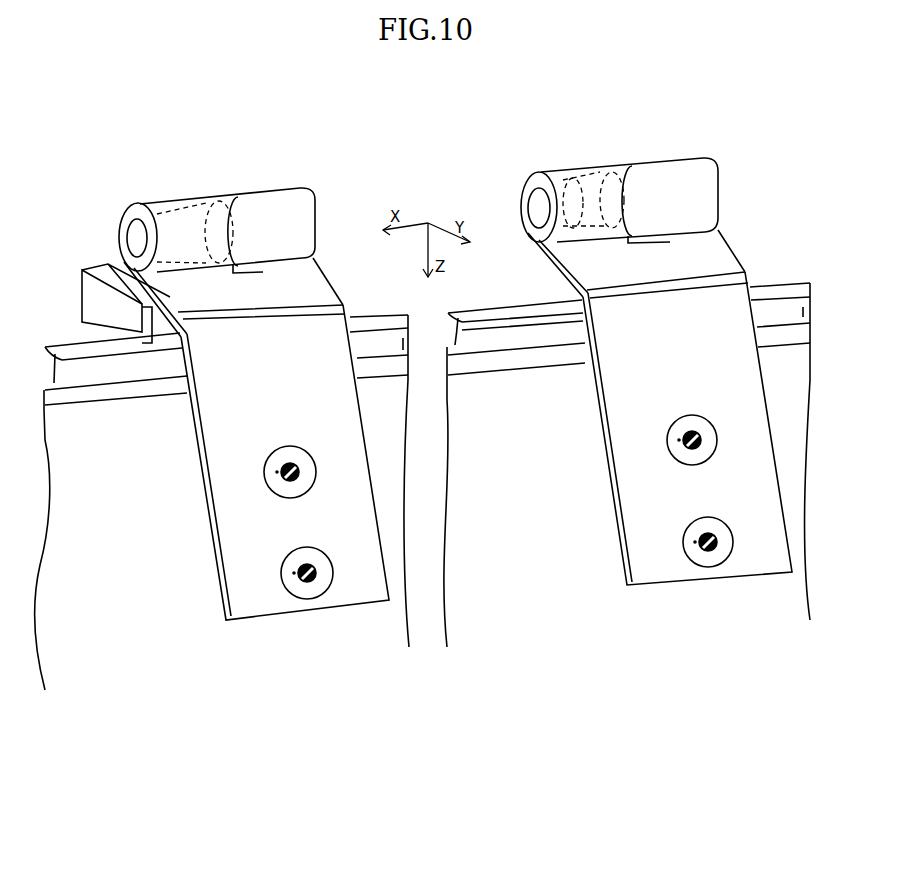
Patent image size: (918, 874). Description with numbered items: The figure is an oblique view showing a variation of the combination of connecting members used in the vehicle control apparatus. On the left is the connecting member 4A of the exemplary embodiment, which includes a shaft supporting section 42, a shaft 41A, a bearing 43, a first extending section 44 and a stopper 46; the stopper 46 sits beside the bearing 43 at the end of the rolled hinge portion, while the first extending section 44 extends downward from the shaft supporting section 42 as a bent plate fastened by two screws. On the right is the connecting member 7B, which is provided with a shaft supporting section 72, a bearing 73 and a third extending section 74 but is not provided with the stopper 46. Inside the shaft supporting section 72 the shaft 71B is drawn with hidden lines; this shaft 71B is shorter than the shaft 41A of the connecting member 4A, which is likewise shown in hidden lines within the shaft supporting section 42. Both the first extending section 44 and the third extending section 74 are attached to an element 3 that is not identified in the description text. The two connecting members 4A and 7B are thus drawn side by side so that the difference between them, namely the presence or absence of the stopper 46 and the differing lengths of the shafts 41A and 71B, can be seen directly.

The shelf panel 3 is at (368, 652).
The stopper 46 is at (92, 300).
The bearing 43 is at (119, 232).
The shaft 41A is at (172, 207).
The connecting member 4A is at (220, 185).
The shaft supporting section 42 is at (275, 202).
The first extending section 44 is at (317, 292).
The bearing 73 is at (522, 190).
The shaft 71B is at (583, 178).
The connecting member 7B is at (617, 156).
The shaft supporting section 72 is at (679, 168).
The third extending section 74 is at (728, 258).